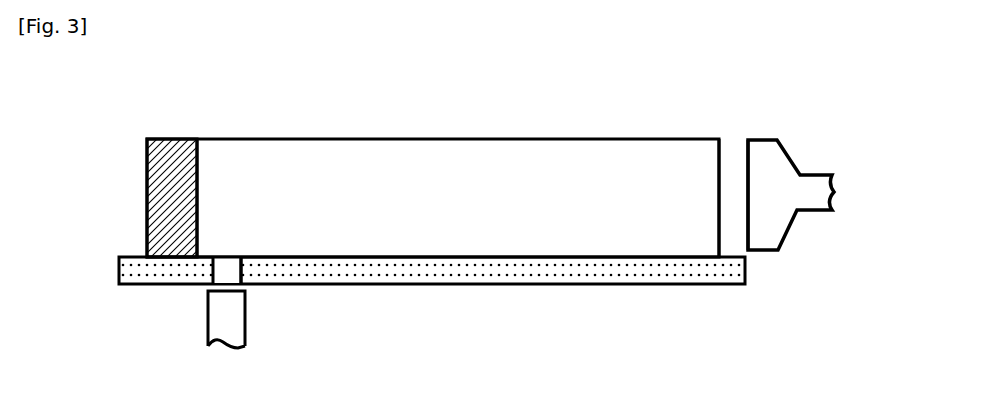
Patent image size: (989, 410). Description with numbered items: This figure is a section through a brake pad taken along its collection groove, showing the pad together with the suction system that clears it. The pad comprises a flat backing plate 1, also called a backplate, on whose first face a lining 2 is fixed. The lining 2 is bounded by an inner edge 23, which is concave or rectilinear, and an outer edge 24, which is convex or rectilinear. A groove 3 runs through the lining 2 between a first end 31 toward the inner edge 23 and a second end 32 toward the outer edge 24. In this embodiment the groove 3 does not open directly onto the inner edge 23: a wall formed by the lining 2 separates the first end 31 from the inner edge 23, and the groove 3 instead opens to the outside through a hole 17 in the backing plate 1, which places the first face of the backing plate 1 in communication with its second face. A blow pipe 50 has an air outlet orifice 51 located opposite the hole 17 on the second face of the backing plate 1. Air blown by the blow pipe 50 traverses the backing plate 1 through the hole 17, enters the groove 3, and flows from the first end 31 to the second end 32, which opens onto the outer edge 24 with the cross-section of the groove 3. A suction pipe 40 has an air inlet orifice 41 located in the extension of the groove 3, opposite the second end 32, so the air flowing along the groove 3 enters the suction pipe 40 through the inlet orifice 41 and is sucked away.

The backing plate 1 is at (365, 263).
The lining 2 is at (167, 227).
The groove 3 is at (460, 168).
The hole 17 is at (229, 265).
The inner edge 23 is at (147, 170).
The outer edge 24 is at (722, 158).
The first end 31 is at (208, 162).
The second end 32 is at (697, 158).
The suction pipe 40 is at (788, 205).
The air inlet orifice 41 is at (748, 202).
The blow pipe 50 is at (224, 322).
The air outlet orifice 51 is at (242, 266).